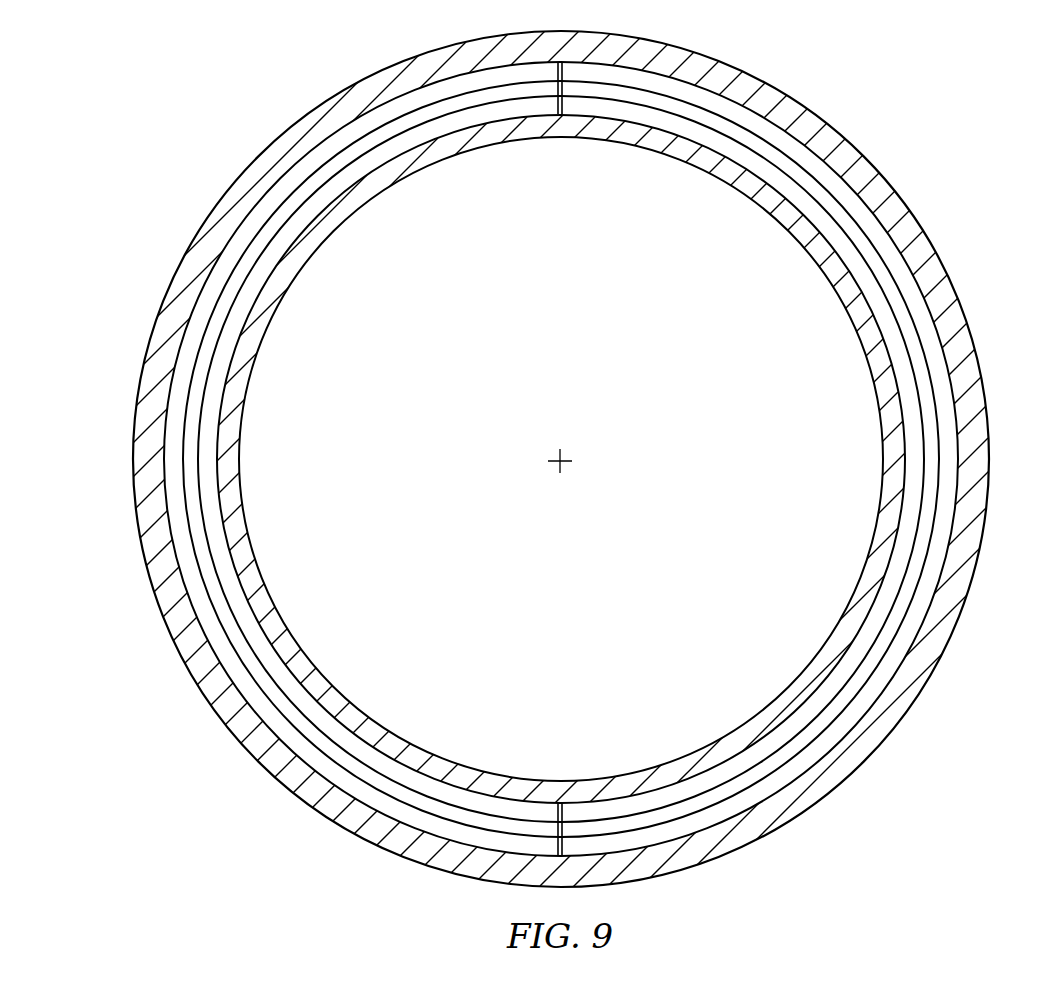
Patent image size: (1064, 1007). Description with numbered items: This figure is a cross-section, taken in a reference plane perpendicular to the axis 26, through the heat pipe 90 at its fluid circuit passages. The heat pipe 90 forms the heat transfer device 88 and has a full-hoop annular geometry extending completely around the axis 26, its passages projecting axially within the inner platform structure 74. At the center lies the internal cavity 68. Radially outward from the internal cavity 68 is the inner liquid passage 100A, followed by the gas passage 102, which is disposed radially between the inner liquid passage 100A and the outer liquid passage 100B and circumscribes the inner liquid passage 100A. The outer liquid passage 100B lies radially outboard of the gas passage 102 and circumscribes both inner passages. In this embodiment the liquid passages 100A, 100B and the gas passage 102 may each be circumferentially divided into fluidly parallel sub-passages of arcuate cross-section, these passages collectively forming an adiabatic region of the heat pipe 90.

The axis 26 is at (563, 461).
The internal cavity 68 is at (579, 250).
The inner platform structure 74 is at (548, 459).
The heat transfer device 88 is at (561, 459).
The heat pipe 90 is at (808, 102).
The inner liquid passage 100A is at (883, 313).
The outer liquid passage 100B is at (905, 279).
The gas passage 102 is at (913, 357).